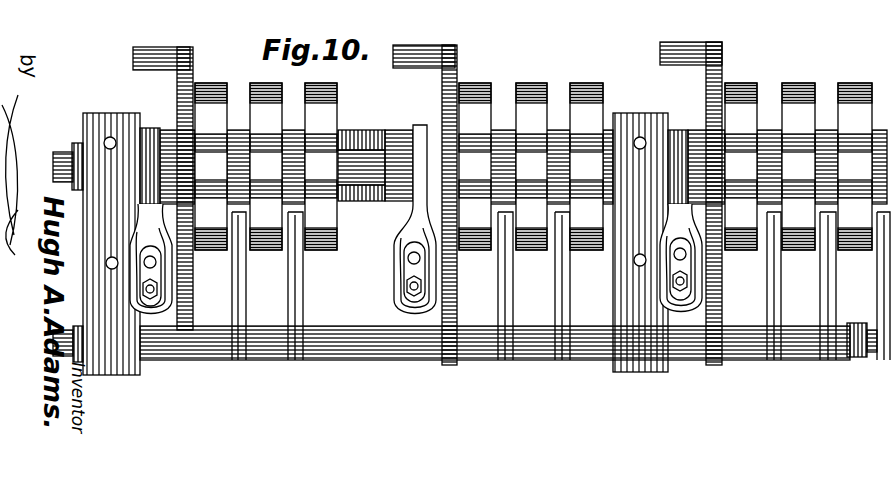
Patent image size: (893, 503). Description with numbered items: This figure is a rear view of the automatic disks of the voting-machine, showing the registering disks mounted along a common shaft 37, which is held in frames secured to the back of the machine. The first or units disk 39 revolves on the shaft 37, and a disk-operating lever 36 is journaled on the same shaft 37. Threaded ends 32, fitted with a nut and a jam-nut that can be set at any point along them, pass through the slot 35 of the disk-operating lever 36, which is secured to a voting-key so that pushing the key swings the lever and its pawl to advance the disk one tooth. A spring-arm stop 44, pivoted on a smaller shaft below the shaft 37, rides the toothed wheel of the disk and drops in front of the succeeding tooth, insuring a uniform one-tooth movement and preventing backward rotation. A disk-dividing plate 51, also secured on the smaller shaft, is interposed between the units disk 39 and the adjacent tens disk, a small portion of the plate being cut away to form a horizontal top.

The shaft 37 is at (57, 166).
The units disk 39 is at (205, 83).
The spring-arm stop 44 is at (724, 62).
The disk-operating lever 36 is at (132, 270).
The slot 35 is at (158, 266).
The threaded ends 32 is at (170, 290).
The disk-dividing plate 51 is at (822, 236).